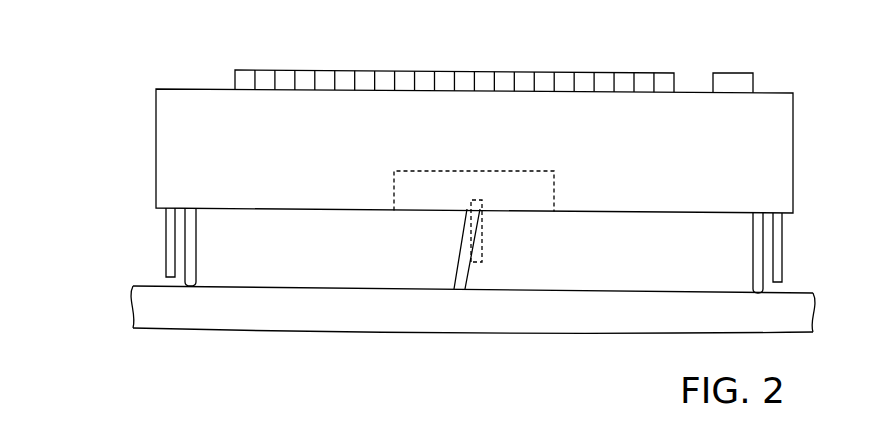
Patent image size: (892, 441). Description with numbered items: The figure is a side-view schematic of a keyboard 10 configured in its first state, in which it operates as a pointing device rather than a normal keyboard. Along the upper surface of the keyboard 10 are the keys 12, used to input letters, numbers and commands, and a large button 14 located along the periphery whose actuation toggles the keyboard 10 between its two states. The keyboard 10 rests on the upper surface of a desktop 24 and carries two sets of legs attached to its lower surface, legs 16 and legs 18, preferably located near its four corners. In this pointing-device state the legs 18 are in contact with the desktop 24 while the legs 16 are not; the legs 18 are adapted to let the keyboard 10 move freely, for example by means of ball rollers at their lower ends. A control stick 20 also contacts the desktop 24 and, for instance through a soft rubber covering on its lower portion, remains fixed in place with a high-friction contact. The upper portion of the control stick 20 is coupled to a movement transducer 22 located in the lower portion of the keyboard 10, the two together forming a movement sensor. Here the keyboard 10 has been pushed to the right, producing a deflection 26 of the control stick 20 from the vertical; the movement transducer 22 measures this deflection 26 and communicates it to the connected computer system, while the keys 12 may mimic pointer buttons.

The keyboard 10 is at (122, 103).
The keys 12 is at (645, 87).
The button 14 is at (733, 85).
The legs 16 is at (172, 248).
The legs 18 is at (190, 248).
The control stick 20 is at (468, 250).
The movement transducer 22 is at (534, 192).
The desktop 24 is at (785, 323).
The deflection 26 is at (473, 253).